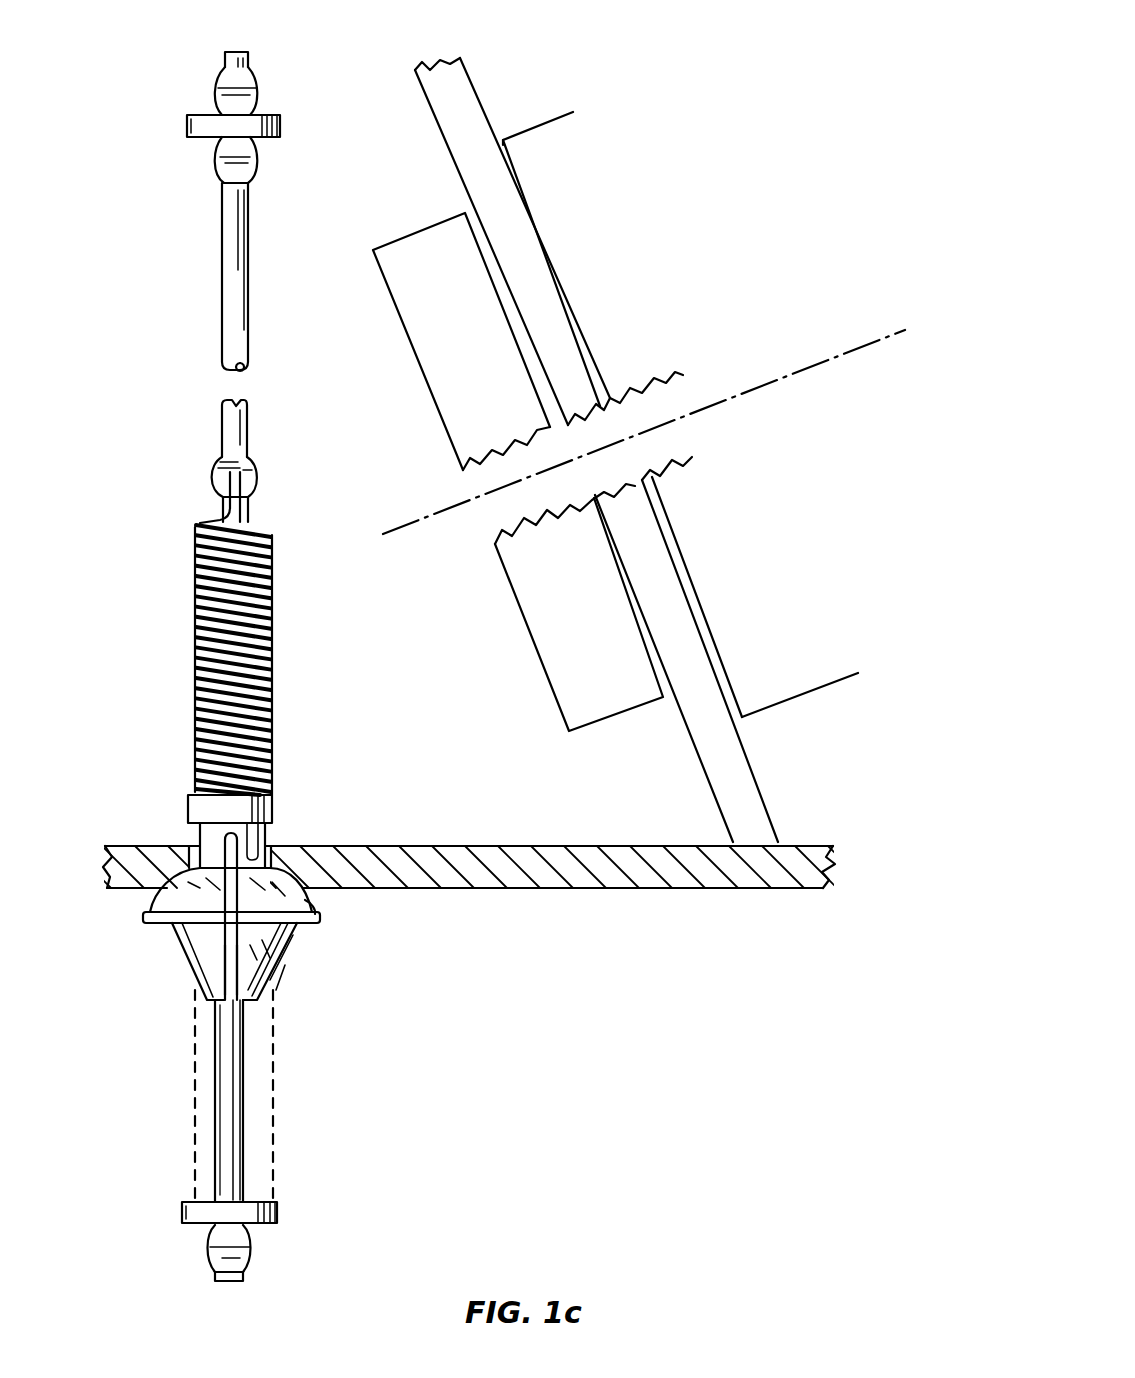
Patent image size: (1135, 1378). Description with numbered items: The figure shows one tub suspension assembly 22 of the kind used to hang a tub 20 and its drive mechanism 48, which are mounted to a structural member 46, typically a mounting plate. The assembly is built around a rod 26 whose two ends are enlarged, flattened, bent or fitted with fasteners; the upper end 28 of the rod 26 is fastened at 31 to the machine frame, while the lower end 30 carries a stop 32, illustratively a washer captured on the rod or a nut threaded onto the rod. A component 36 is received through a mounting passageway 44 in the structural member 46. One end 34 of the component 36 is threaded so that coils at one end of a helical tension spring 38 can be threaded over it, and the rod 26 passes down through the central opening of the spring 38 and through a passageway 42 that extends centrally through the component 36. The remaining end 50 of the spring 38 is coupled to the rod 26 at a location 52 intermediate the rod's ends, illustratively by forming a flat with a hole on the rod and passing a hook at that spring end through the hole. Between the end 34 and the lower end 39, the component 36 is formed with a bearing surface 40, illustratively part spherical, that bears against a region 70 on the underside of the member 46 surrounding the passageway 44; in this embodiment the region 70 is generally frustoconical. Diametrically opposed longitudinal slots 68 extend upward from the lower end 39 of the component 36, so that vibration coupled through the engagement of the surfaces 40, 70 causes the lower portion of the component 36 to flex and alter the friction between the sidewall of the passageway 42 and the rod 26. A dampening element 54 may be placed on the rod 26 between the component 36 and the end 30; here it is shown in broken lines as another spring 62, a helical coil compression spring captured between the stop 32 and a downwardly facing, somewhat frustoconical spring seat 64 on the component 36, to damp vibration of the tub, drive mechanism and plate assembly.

The tub 20 is at (796, 588).
The tub suspension assembly 22 is at (258, 254).
The rod 26 is at (240, 333).
The end of rod 28 is at (292, 54).
The end of rod 30 is at (262, 1250).
The fastening location 31 is at (282, 125).
The stop 32 is at (279, 1211).
The end of component 34 is at (214, 782).
The component 36 is at (300, 950).
The tension spring 38 is at (272, 620).
The lower end of component 39 is at (210, 1012).
The bearing surface 40 is at (160, 882).
The passageway 42 is at (226, 950).
The mounting passageway 44 is at (263, 856).
The structural member 46 is at (727, 762).
The drive mechanism 48 is at (606, 651).
The end of spring 50 is at (290, 500).
The location 52 is at (208, 462).
The dampening element 54 is at (314, 1112).
The spring 62 is at (275, 1130).
The spring seat 64 is at (298, 962).
The slots 68 is at (288, 997).
The region 70 is at (302, 902).